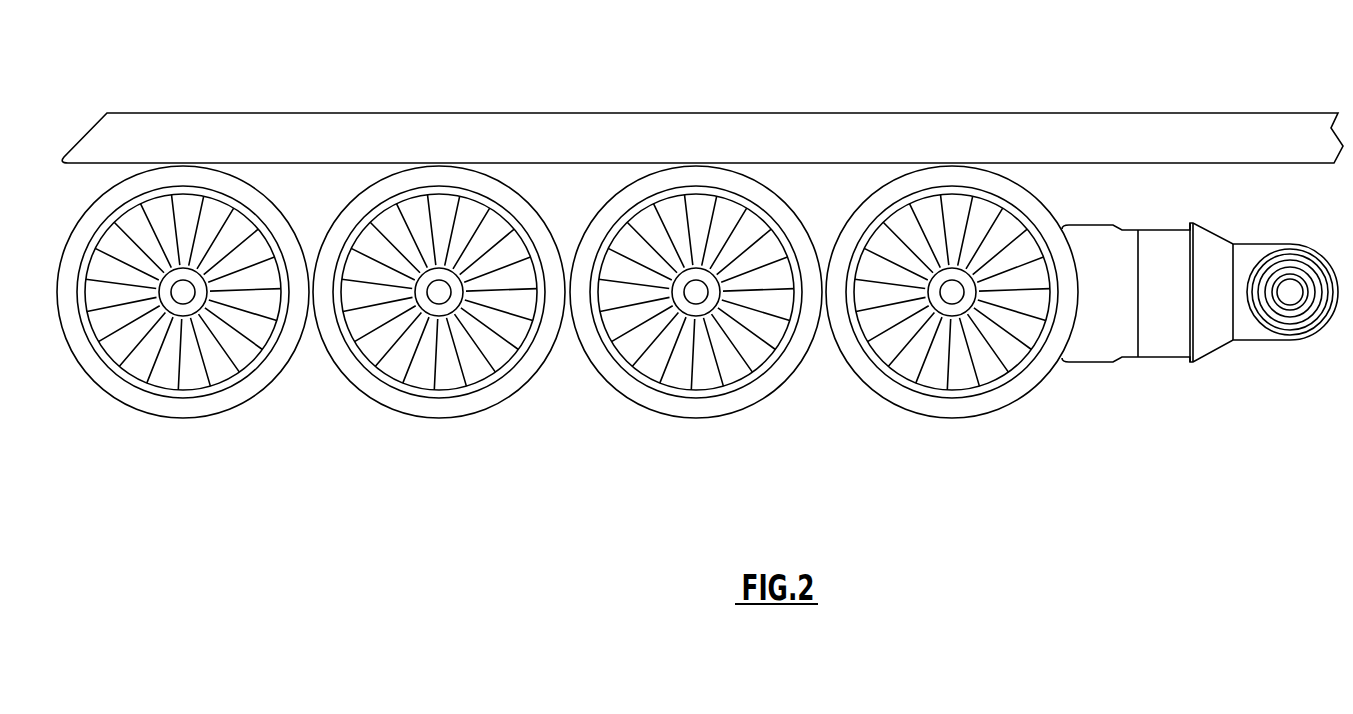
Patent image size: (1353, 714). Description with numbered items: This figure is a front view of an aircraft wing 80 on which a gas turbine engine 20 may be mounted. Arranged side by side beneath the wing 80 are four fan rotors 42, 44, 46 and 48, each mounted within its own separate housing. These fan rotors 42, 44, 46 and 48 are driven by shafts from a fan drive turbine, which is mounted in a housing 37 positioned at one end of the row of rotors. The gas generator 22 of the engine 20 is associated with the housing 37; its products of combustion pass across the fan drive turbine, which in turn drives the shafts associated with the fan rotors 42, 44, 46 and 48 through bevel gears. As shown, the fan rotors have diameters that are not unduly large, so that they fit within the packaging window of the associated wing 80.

The aircraft wing 80 is at (957, 134).
The fan rotor 48 is at (183, 309).
The fan rotor 46 is at (439, 309).
The fan rotor 44 is at (696, 309).
The fan rotor 42 is at (952, 309).
The housing 37 is at (1143, 358).
The gas generator 22 is at (1295, 300).
The gas turbine engine 20 is at (1250, 211).